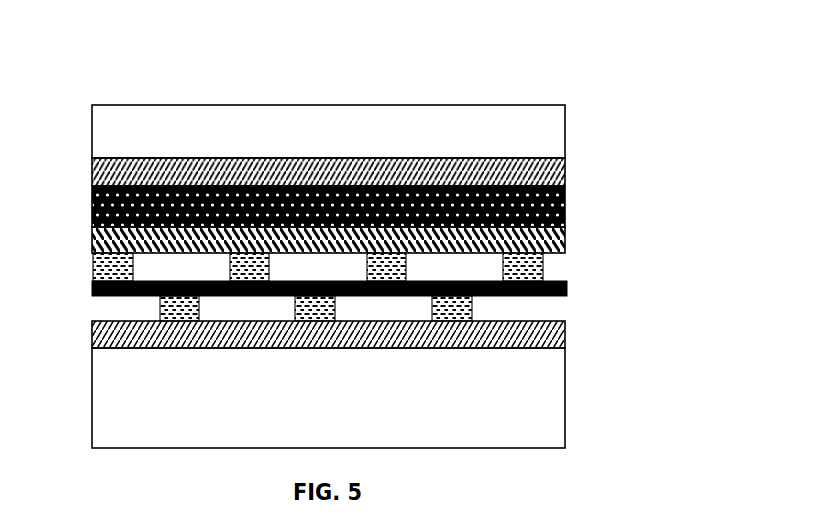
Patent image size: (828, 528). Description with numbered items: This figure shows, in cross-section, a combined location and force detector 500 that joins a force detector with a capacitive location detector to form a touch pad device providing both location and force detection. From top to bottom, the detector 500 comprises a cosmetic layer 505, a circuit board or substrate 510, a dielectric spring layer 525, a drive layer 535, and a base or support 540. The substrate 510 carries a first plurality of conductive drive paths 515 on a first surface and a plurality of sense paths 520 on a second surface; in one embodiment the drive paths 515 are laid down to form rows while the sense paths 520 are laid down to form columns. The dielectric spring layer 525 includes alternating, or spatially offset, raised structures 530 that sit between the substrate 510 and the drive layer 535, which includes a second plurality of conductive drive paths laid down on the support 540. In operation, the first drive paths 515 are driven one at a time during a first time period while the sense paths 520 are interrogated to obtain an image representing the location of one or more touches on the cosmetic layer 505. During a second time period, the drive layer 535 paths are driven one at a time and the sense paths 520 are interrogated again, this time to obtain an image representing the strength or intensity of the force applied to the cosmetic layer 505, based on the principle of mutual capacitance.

The combined location and force detector 500 is at (537, 81).
The cosmetic layer 505 is at (346, 144).
The circuit board or substrate 510 is at (565, 207).
The first plurality of conductive drive paths 515 is at (92, 175).
The sense paths 520 is at (92, 238).
The dielectric spring layer 525 is at (567, 288).
The raised structures 530 is at (574, 270).
The drive layer 535 is at (92, 338).
The base or support 540 is at (346, 411).